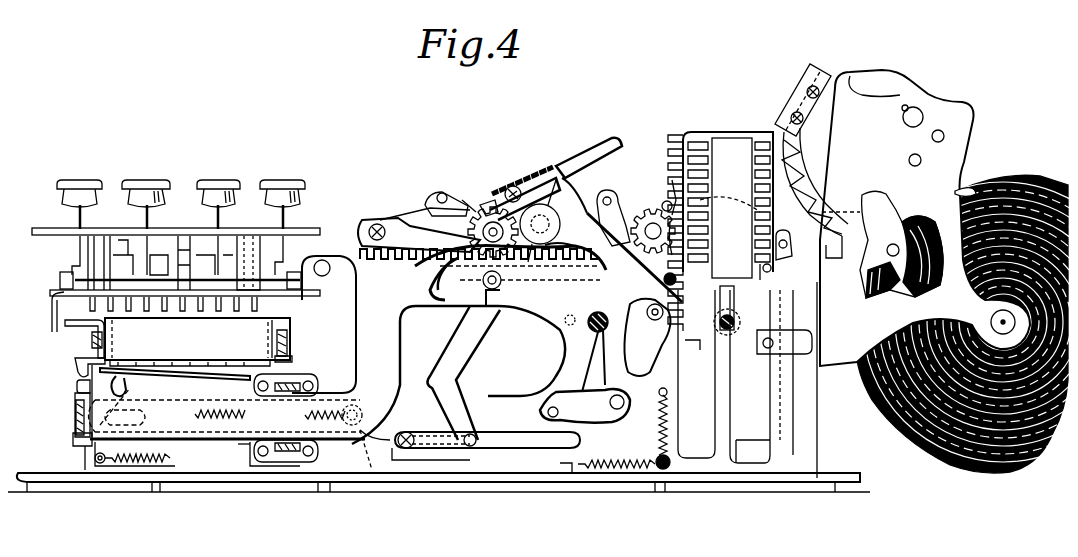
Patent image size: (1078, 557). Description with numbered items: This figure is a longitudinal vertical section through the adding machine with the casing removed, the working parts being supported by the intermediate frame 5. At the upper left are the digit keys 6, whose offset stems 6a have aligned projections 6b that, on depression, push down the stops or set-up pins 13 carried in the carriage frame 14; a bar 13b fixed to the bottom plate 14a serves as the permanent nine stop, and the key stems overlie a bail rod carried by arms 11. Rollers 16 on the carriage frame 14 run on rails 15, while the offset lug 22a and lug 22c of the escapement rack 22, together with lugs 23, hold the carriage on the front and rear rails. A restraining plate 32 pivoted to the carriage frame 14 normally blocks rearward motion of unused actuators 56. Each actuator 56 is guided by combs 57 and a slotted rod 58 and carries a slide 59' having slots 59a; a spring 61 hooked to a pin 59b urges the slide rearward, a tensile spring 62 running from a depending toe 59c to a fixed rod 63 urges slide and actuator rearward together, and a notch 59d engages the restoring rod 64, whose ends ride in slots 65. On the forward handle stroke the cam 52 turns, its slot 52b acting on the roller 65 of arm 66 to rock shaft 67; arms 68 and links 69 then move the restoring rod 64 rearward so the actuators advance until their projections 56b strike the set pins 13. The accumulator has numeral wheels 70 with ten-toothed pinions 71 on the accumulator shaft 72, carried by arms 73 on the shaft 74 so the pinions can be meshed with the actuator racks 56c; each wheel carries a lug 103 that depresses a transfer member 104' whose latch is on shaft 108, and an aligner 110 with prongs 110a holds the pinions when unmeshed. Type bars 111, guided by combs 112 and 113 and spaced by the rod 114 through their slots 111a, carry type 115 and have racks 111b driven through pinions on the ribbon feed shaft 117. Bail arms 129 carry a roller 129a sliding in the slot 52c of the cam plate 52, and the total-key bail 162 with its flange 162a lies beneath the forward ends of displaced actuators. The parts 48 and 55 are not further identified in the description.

The intermediate frame 5 is at (580, 482).
The digit keys 6 is at (145, 185).
The offset stems 6a is at (122, 250).
The longitudinally aligned projections 6b is at (180, 245).
The arms 11 is at (670, 200).
The stops or set-up pins 13 is at (248, 302).
The bar 13b is at (232, 372).
The carriage frame 14 is at (197, 339).
The bottom plate 14a is at (243, 339).
The rails 15 is at (292, 342).
The rollers 16 is at (70, 299).
The escapement rack 22 is at (78, 332).
The offset lug 22a is at (56, 308).
The lug 22c is at (76, 386).
The lugs 23 is at (282, 365).
The restraining plate 32 is at (175, 400).
The lever 48 is at (590, 388).
The cam 52 is at (524, 312).
The slot 52b is at (565, 220).
The slot 52c is at (720, 298).
The cam 55 is at (945, 470).
The actuators 56 is at (392, 340).
The projections 56b is at (76, 412).
The actuator racks 56c is at (325, 252).
The combs 57 is at (310, 372).
The rod 58 is at (668, 218).
The slide 59' is at (431, 481).
The slots 59a is at (388, 450).
The pin 59b is at (226, 424).
The depending toe 59c is at (100, 463).
The notch 59d is at (445, 488).
The spring 61 is at (241, 454).
The tensile spring 62 is at (130, 462).
The fixed rod 63 is at (665, 472).
The restoring rod 64 is at (420, 448).
The roller 65 is at (452, 268).
The arm 66 is at (538, 210).
The shaft 67 is at (510, 188).
The arms 68 is at (468, 350).
The links 69 is at (450, 455).
The numeral or registering wheels 70 is at (480, 210).
The ten-toothed pinions 71 is at (425, 208).
The accumulator shaft 72 is at (436, 200).
The arms 73 is at (380, 220).
The shaft 74 is at (362, 226).
The lug 103 is at (500, 195).
The pivot 104' is at (326, 297).
The shaft 108 is at (468, 205).
The aligner 110 is at (586, 166).
The depending prongs 110a is at (490, 215).
The type bars 111 is at (770, 450).
The vertical slots 111a is at (750, 465).
The racks 111b is at (686, 360).
The fixed comb 112 is at (672, 222).
The fixed comb 113 is at (786, 240).
The fixed rod 114 is at (710, 338).
The type 115 is at (700, 145).
The ribbon feed shaft 117 is at (668, 190).
The bail arms 129 is at (630, 190).
The roller 129a is at (716, 326).
The bail 162 is at (74, 438).
The rearwardly projecting flange 162a is at (85, 446).